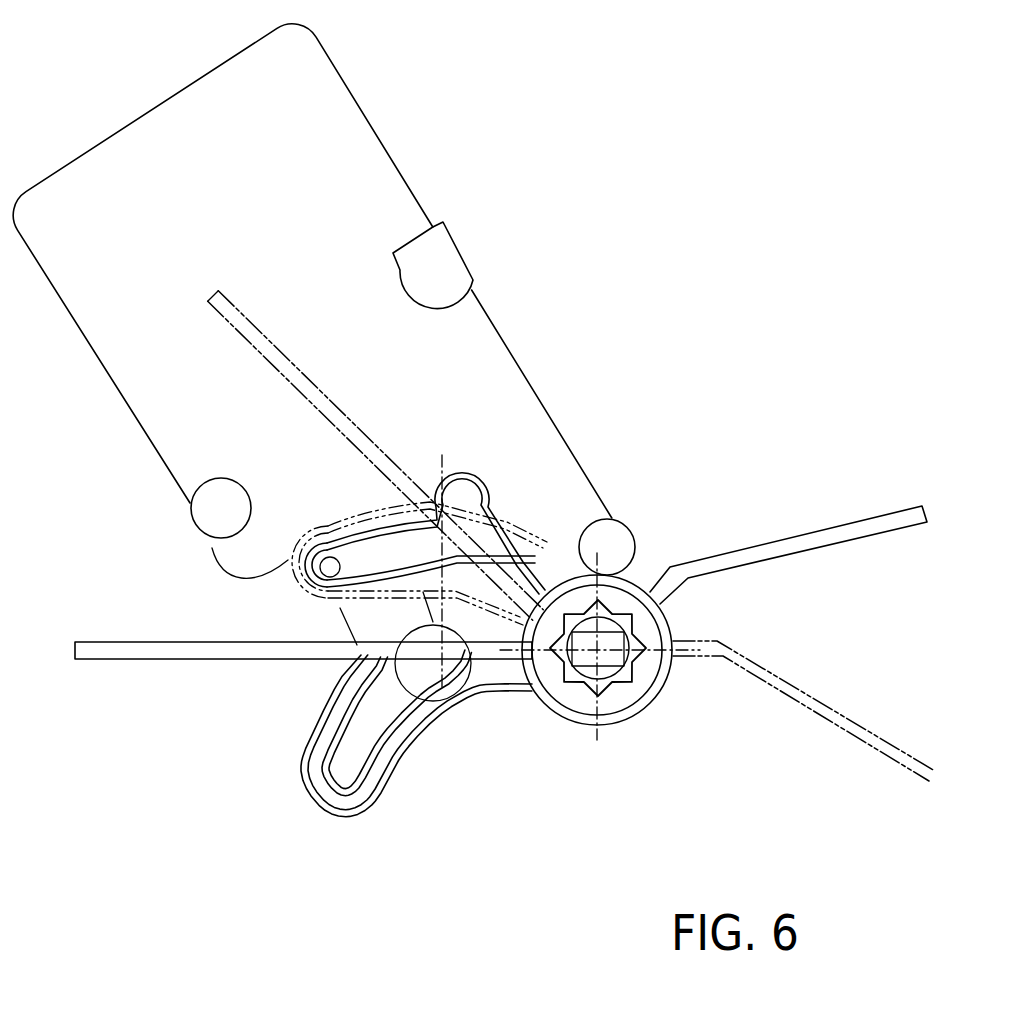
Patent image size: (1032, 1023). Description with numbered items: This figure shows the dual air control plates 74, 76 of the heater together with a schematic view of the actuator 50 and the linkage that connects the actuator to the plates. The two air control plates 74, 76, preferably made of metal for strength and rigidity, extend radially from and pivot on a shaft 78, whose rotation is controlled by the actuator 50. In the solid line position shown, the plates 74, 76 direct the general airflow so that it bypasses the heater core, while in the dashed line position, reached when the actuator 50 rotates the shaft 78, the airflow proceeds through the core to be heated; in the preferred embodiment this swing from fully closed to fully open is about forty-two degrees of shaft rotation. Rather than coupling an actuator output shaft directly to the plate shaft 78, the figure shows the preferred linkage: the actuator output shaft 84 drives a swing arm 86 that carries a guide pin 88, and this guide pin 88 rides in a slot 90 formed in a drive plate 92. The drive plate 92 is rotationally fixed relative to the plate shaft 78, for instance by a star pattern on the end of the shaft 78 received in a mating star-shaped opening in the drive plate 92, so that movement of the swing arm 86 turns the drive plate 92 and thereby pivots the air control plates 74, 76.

The actuator 50 is at (312, 138).
The air control plate 74 is at (278, 358).
The air control plate 76 is at (830, 532).
The shaft 78 is at (607, 658).
The actuator output shaft 84 is at (467, 497).
The swing arm 86 is at (430, 598).
The guide pin 88 is at (290, 556).
The slot 90 is at (358, 747).
The drive plate 92 is at (407, 728).